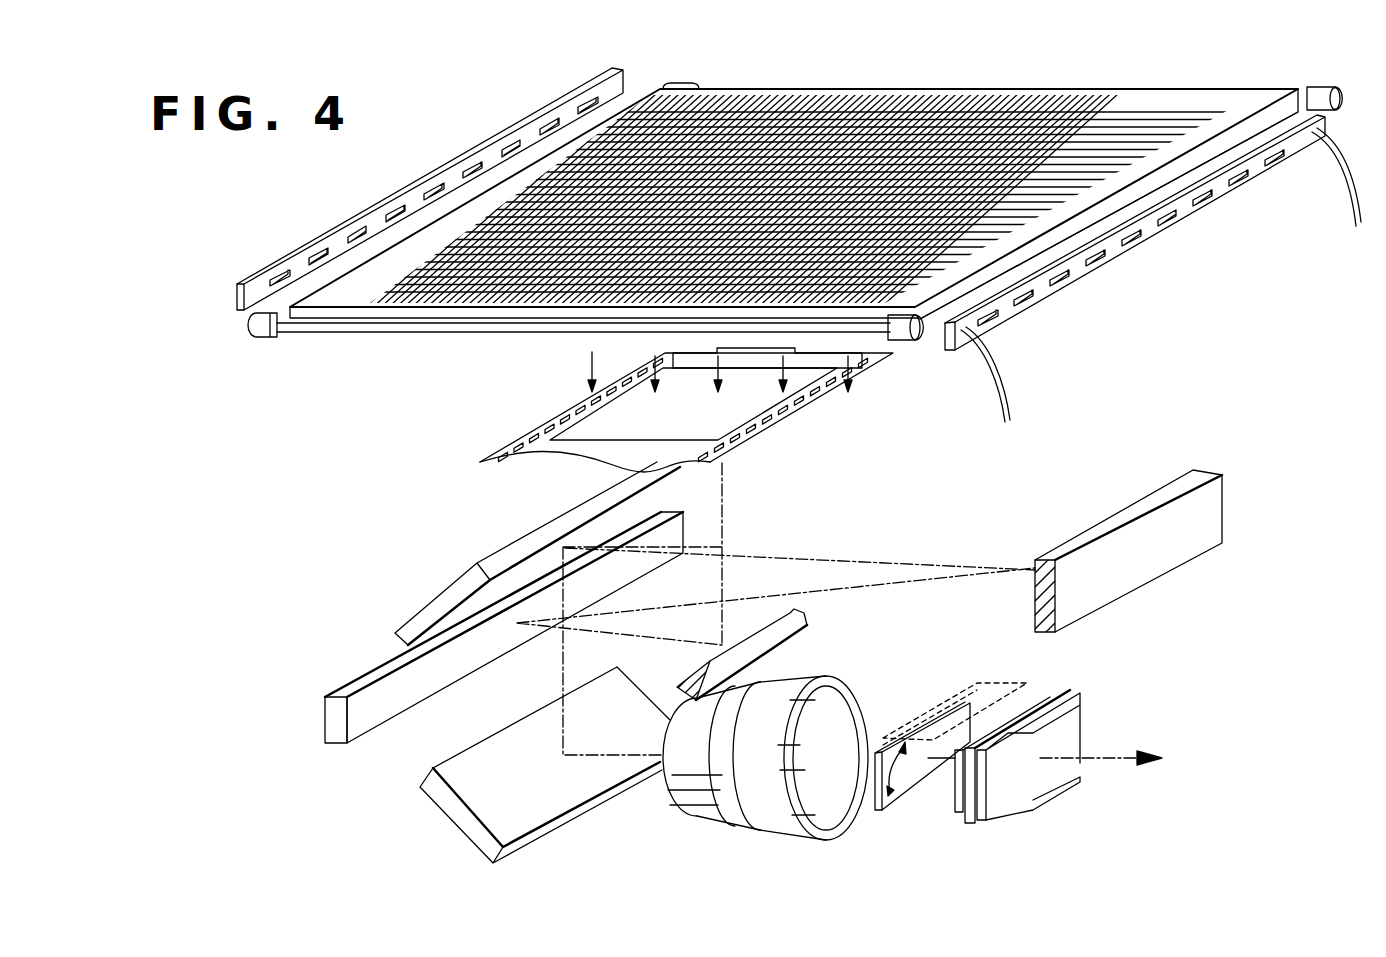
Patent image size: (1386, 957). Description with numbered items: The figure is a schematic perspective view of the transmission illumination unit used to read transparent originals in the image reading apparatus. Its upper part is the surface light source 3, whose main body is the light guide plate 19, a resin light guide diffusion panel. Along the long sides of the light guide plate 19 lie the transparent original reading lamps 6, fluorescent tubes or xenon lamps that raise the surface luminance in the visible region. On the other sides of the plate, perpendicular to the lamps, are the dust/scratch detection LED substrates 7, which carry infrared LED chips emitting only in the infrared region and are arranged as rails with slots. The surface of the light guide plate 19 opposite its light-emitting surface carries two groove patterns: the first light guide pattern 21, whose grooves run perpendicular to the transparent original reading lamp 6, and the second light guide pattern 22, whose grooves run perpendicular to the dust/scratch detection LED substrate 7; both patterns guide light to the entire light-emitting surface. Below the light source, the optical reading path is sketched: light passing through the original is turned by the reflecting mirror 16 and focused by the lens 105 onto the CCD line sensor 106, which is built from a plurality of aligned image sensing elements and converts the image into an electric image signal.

The surface light source 3 is at (1246, 226).
The transparent original reading lamp 6 is at (437, 323).
The dust/scratch detection LED substrate 7 is at (237, 298).
The light guide plate 19 is at (340, 293).
The first light guide pattern 21 is at (866, 300).
The second light guide pattern 22 is at (1083, 197).
The reflecting mirror 16 is at (1143, 568).
The lens 105 is at (680, 787).
The CCD line sensor 106 is at (995, 803).